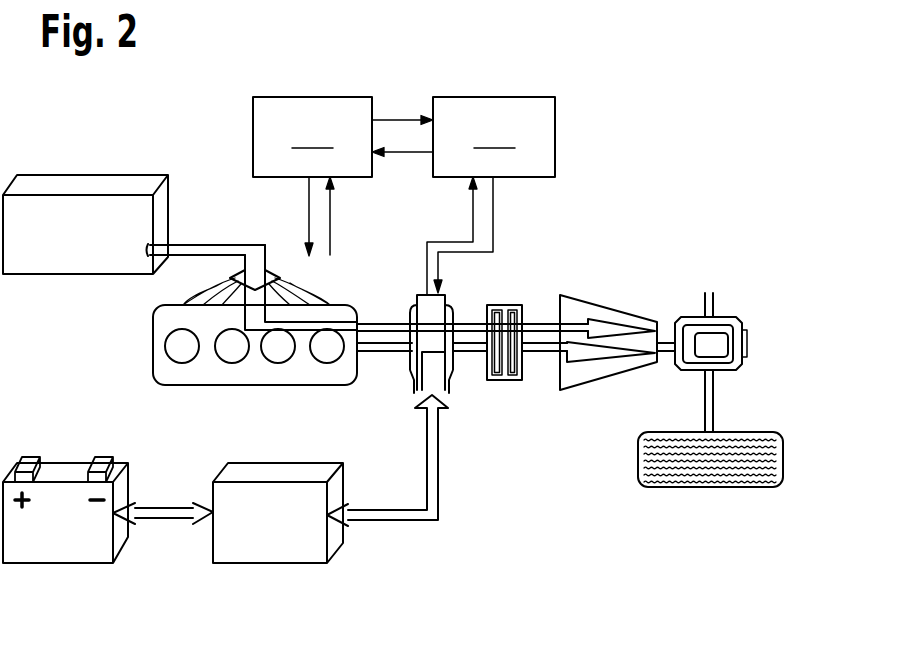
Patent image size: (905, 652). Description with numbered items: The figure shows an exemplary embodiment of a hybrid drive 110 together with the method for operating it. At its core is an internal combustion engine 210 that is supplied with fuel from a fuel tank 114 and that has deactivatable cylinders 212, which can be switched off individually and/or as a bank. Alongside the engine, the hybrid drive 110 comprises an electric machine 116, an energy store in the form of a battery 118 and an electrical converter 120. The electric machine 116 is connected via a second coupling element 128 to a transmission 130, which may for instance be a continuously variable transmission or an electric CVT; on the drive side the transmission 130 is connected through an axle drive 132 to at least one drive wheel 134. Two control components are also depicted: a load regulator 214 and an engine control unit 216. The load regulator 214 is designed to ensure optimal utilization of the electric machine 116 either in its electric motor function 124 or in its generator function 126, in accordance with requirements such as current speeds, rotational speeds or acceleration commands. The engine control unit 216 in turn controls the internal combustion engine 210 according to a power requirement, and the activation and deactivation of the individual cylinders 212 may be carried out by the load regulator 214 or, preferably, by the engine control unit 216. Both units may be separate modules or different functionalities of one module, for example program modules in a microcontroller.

The hybrid drive 110 is at (708, 260).
The fuel tank 114 is at (165, 199).
The electric machine 116 is at (436, 308).
The battery 118 is at (32, 548).
The electrical converter 120 is at (285, 553).
The electric motor function 124 is at (431, 349).
The generator function 126 is at (431, 342).
The second coupling element 128 is at (503, 381).
The transmission 130 is at (597, 376).
The axle drive 132 is at (738, 320).
The drive wheel 134 is at (750, 445).
The internal combustion engine 210 is at (175, 326).
The deactivatable cylinders 212 is at (187, 348).
The load regulator 214 is at (491, 196).
The engine control unit 216 is at (343, 176).